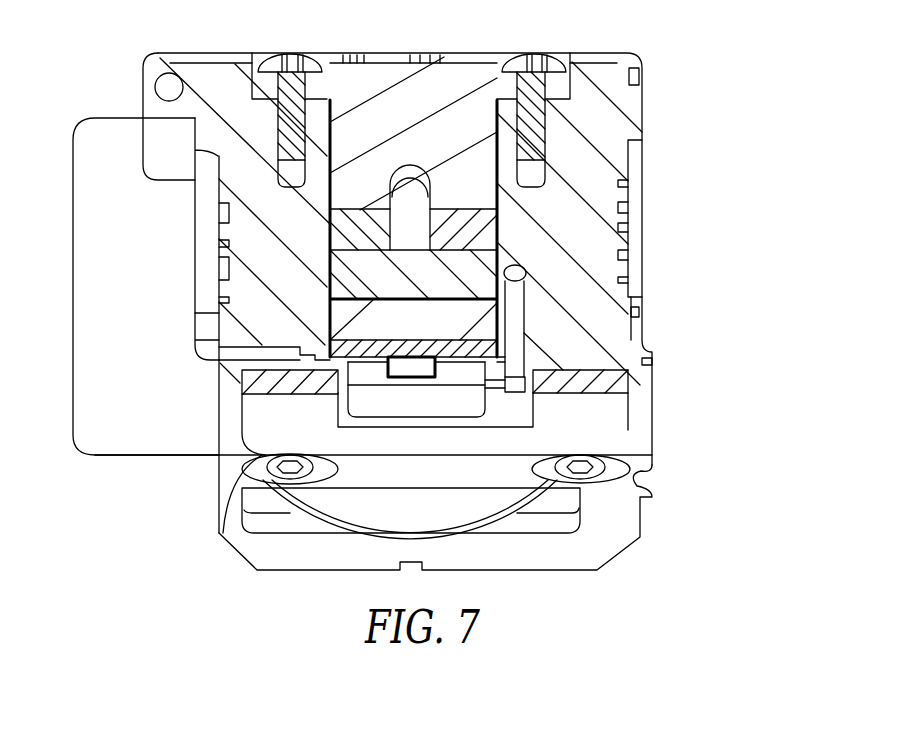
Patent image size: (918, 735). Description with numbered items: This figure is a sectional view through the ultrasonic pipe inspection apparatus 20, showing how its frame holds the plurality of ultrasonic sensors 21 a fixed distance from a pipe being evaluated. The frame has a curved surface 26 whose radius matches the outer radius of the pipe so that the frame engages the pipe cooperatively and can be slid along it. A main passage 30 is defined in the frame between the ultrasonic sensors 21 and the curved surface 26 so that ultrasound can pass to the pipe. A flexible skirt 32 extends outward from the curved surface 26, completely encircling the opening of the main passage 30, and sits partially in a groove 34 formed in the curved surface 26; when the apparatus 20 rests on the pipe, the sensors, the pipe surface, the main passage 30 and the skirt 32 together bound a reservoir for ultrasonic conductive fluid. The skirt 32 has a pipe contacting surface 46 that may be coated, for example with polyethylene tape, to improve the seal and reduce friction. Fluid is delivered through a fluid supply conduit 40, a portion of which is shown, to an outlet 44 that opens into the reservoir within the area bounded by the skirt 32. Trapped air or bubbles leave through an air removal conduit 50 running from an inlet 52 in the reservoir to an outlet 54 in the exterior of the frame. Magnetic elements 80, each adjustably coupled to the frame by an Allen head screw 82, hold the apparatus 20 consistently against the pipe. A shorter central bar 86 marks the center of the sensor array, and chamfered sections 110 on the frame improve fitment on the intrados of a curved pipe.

The apparatus 20 is at (725, 108).
The ultrasonic sensors 21 is at (408, 366).
The curved surface 26 is at (219, 397).
The main passage 30 is at (473, 368).
The skirt 32 is at (585, 380).
The groove 34 is at (263, 395).
The fluid supply conduit 40 is at (510, 302).
The outlet 44 is at (513, 412).
The pipe contacting surface 46 is at (593, 415).
The air removal conduit 50 is at (295, 353).
The inlet 52 is at (365, 352).
The outlet 54 is at (185, 349).
The magnetic element 80 is at (633, 455).
The Allen head screw 82 is at (305, 473).
The central bar 86 is at (245, 460).
The chamfered section 110 is at (225, 568).